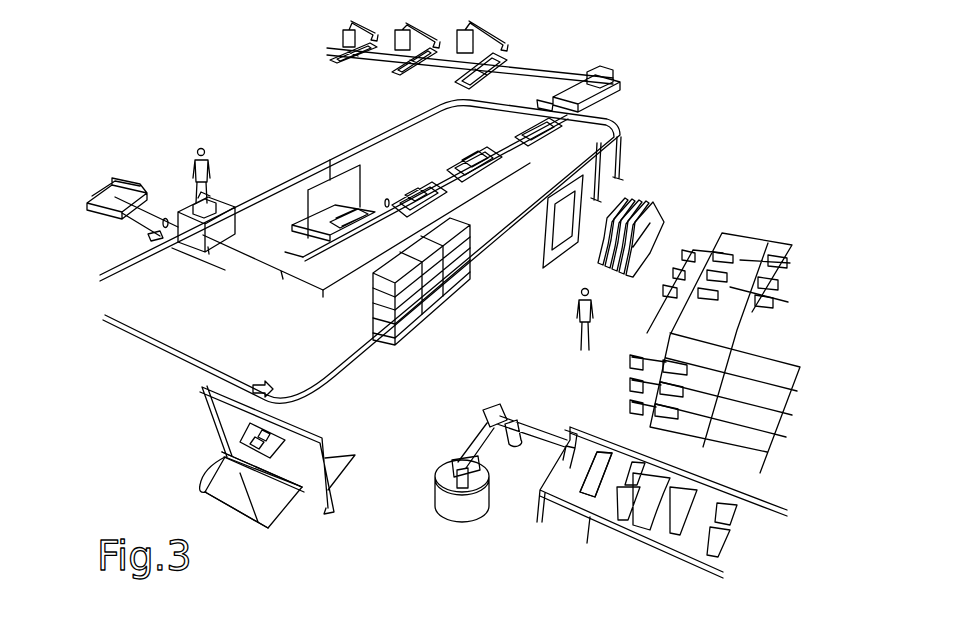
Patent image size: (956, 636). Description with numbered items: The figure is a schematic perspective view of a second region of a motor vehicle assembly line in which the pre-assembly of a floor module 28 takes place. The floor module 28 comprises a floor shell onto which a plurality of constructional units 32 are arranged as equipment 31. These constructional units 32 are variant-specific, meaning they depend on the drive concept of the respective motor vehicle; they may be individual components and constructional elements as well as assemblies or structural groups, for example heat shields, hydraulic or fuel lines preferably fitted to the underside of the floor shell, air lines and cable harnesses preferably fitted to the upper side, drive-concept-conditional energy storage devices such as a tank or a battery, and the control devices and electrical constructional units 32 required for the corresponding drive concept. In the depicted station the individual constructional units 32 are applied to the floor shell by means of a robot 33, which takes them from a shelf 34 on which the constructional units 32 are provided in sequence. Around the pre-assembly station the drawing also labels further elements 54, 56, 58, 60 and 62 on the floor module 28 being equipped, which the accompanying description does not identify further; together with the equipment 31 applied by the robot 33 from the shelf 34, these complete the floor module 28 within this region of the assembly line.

The floor module 28 is at (242, 517).
The equipment 31 is at (303, 414).
The constructional units 32 is at (268, 438).
The robot 33 is at (477, 440).
The shelf 34 is at (727, 222).
The guide rail 54 is at (215, 478).
The sheet 56 is at (300, 517).
The fold line 58 is at (263, 503).
The holding element 60 is at (200, 490).
The support 62 is at (355, 455).